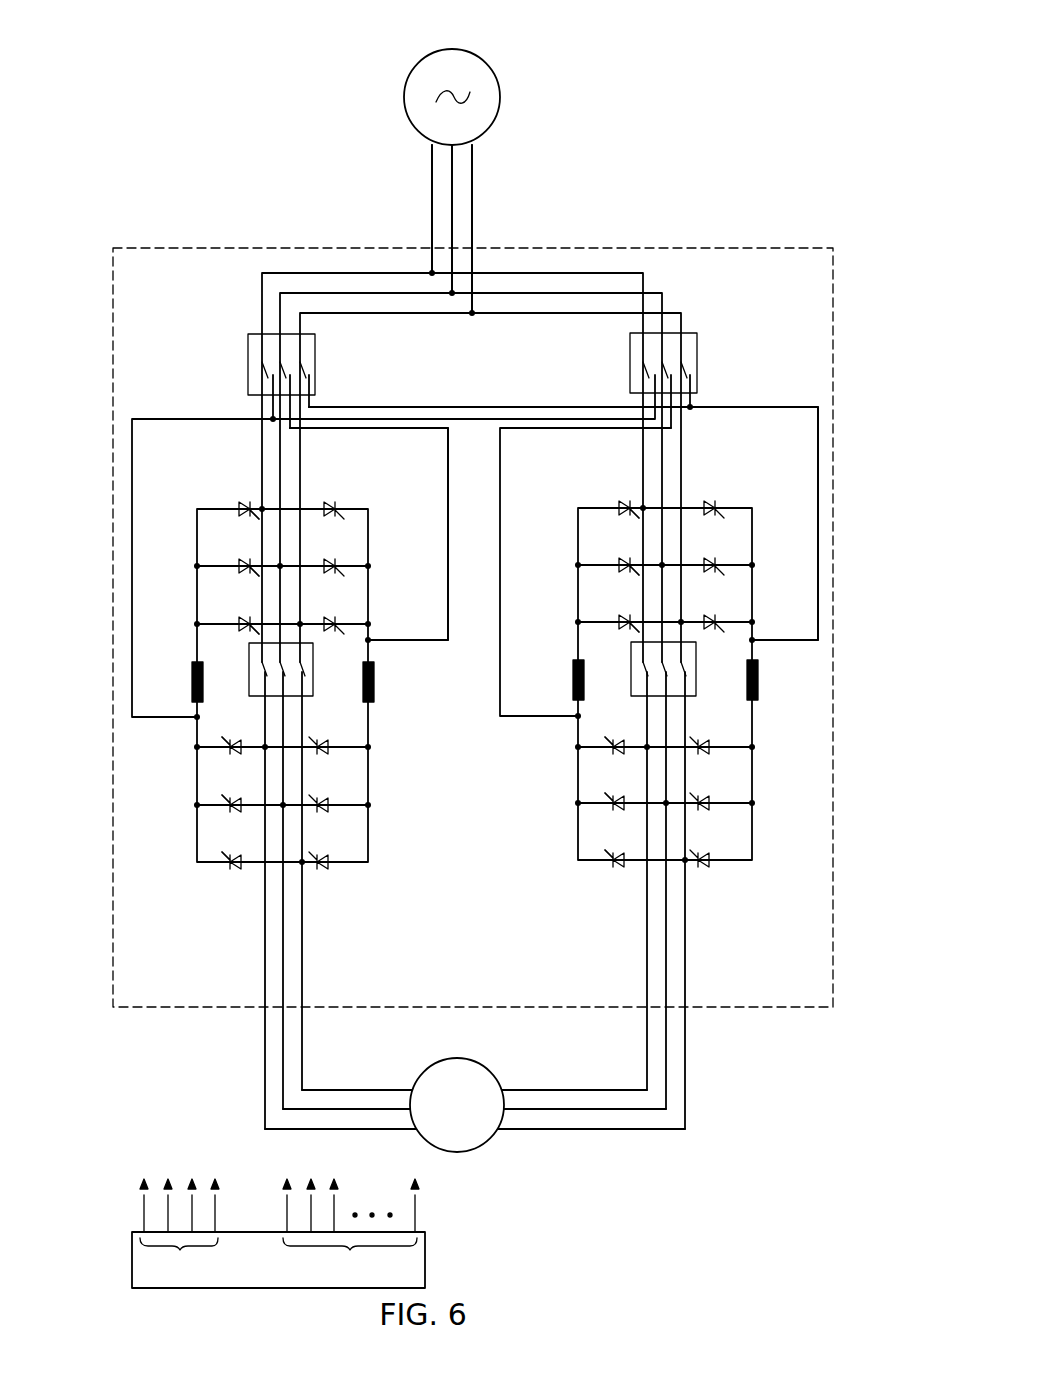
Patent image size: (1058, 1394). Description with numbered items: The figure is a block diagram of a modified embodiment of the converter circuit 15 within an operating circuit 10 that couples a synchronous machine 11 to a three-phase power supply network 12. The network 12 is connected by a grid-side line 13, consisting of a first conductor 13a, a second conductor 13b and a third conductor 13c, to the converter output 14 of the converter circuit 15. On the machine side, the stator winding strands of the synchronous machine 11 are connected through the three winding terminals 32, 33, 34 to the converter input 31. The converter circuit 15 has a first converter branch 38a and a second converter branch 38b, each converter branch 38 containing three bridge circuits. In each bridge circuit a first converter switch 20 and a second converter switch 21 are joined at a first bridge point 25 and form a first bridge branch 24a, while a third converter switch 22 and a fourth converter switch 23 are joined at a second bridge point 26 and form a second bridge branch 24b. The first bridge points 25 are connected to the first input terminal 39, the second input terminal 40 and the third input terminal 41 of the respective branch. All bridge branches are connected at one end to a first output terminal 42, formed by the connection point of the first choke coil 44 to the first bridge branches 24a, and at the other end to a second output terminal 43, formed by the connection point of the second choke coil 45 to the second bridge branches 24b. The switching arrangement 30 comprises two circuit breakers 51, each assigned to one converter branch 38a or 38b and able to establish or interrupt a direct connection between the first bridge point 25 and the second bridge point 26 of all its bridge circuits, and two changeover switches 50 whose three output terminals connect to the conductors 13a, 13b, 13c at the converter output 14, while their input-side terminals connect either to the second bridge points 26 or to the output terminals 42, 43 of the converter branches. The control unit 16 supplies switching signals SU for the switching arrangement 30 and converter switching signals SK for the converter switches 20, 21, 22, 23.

The operating circuit 10 is at (702, 88).
The synchronous machine 11 is at (458, 1152).
The power supply network 12 is at (456, 49).
The grid-side line 13 is at (490, 195).
The first conductor 13a is at (432, 170).
The second conductor 13b is at (452, 200).
The third conductor 13c is at (472, 226).
The converter output 14 is at (493, 237).
The converter circuit 15 is at (680, 247).
The control unit 16 is at (428, 1256).
The first converter switch 20 is at (236, 740).
The second converter switch 21 is at (325, 760).
The third converter switch 22 is at (240, 566).
The fourth converter switch 23 is at (328, 503).
The first bridge branch 24a is at (372, 750).
The second bridge branch 24b is at (196, 505).
The first bridge point 25 is at (240, 803).
The second bridge point 26 is at (258, 508).
The switching arrangement 30 is at (728, 357).
The converter input 31 is at (645, 1012).
The first winding terminal 32 is at (410, 1090).
The second winding terminal 33 is at (510, 1097).
The third winding terminal 34 is at (418, 1140).
The converter branch 38 is at (554, 523).
The first converter branch 38a is at (357, 500).
The second converter branch 38b is at (732, 487).
The first input terminal 39 is at (265, 912).
The second input terminal 40 is at (283, 940).
The third input terminal 41 is at (302, 968).
The first output terminal 42 is at (162, 717).
The second output terminal 43 is at (373, 668).
The first choke coil 44 is at (190, 682).
The second choke coil 45 is at (316, 685).
The changeover switch 50 is at (318, 366).
The circuit breaker 51 is at (313, 695).